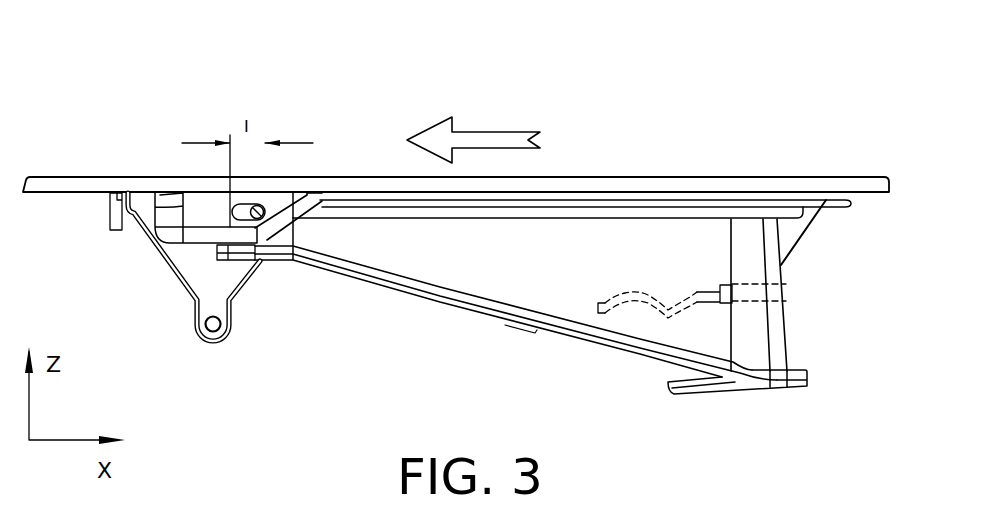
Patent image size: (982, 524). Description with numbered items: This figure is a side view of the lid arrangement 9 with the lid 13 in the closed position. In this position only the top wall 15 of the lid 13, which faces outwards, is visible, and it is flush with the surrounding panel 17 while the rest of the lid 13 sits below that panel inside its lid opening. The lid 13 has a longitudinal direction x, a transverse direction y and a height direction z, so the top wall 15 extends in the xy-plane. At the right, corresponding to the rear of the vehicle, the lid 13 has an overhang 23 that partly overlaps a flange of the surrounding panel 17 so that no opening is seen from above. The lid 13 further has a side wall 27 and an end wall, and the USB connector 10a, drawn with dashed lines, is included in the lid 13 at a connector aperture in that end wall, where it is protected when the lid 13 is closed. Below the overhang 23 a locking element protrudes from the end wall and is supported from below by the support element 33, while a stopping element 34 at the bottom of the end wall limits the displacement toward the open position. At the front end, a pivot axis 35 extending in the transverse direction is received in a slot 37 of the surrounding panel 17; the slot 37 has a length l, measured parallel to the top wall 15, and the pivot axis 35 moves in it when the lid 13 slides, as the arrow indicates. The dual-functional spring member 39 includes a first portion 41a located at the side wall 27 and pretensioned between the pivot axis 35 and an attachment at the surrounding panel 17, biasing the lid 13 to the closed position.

The table assembly 9 is at (342, 65).
The surrounding panel 17 is at (123, 176).
The overhang 23 is at (876, 186).
The top wall 15 is at (621, 208).
The lid 13 is at (683, 257).
The support element 33 is at (795, 225).
The stopping element 34 is at (795, 387).
The side wall 27 is at (510, 260).
The USB connector 10a is at (753, 290).
The pivot axis 35 is at (265, 135).
The slot 37 is at (233, 213).
The spring member 39 is at (205, 247).
The first portion 41a is at (145, 271).